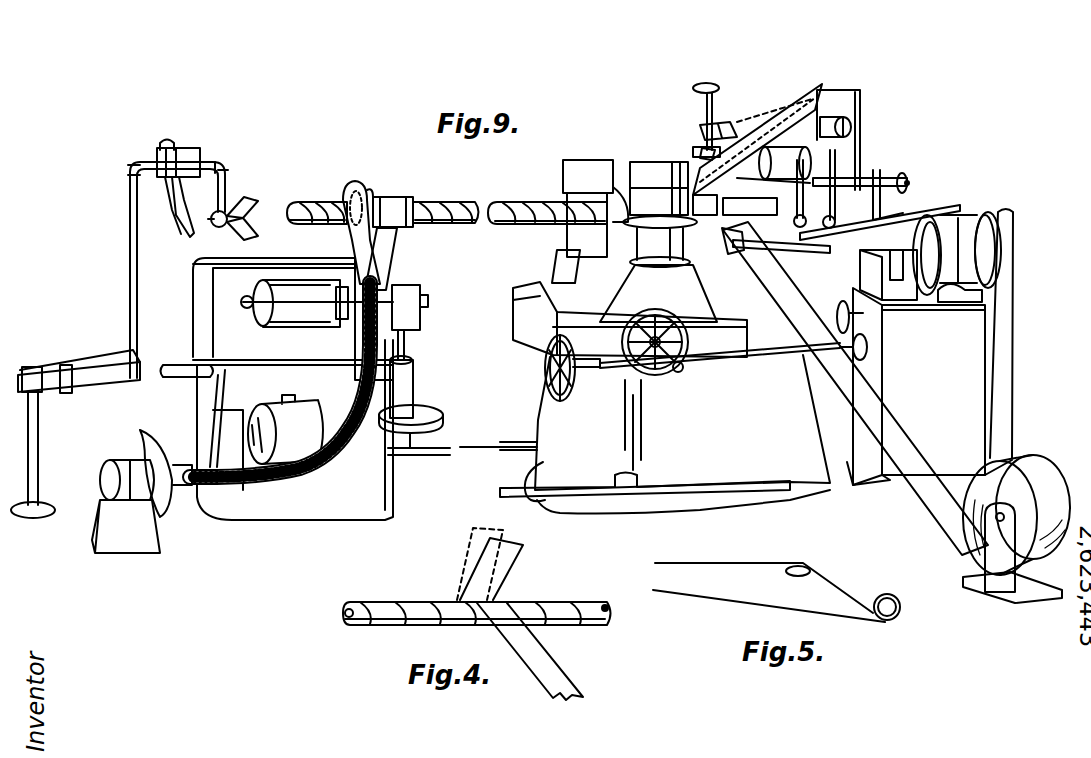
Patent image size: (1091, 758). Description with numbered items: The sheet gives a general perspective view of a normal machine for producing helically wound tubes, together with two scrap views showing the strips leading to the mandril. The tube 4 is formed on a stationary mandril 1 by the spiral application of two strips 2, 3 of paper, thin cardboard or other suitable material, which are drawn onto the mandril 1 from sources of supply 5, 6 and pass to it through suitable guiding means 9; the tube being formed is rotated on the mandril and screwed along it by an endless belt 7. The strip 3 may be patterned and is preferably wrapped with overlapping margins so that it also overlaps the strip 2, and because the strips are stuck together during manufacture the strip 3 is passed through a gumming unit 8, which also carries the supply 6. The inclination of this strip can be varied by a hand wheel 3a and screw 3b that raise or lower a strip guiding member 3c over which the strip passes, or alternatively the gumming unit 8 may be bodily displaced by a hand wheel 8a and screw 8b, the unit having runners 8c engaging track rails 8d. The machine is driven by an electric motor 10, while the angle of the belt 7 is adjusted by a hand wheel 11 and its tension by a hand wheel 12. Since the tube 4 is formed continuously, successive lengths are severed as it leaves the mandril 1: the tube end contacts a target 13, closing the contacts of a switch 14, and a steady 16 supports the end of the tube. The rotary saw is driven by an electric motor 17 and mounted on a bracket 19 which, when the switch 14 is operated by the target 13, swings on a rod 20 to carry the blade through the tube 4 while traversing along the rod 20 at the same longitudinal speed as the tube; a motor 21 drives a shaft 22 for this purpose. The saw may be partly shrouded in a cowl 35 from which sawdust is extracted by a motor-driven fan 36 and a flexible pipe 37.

The mandril 1 is at (760, 222).
The strip 2 is at (928, 497).
The strip 3 is at (780, 113).
The hand wheel 3a is at (710, 77).
The screw 3b is at (707, 118).
The strip guiding member 3c is at (722, 125).
The tube 4 is at (305, 203).
The source of supply 5 is at (1040, 482).
The source of supply 6 is at (832, 192).
The endless belt 7 is at (653, 190).
The gumming unit 8 is at (857, 122).
The hand wheel 8a is at (908, 180).
The screw 8b is at (880, 178).
The runners 8c is at (832, 222).
The track rails 8d is at (942, 205).
The guiding means 9 is at (730, 250).
The electric motor 10 is at (970, 240).
The hand wheel 11 is at (572, 383).
The hand wheel 12 is at (656, 378).
The target 13 is at (182, 205).
The switch 14 is at (188, 153).
The steady 16 is at (248, 203).
The electric motor 17 is at (395, 202).
The bracket 19 is at (382, 262).
The rod 20 is at (296, 295).
The motor 21 is at (310, 437).
The shaft 22 is at (410, 345).
The cowl 35 is at (367, 192).
The motor-driven fan 36 is at (165, 512).
The flexible pipe 37 is at (262, 487).